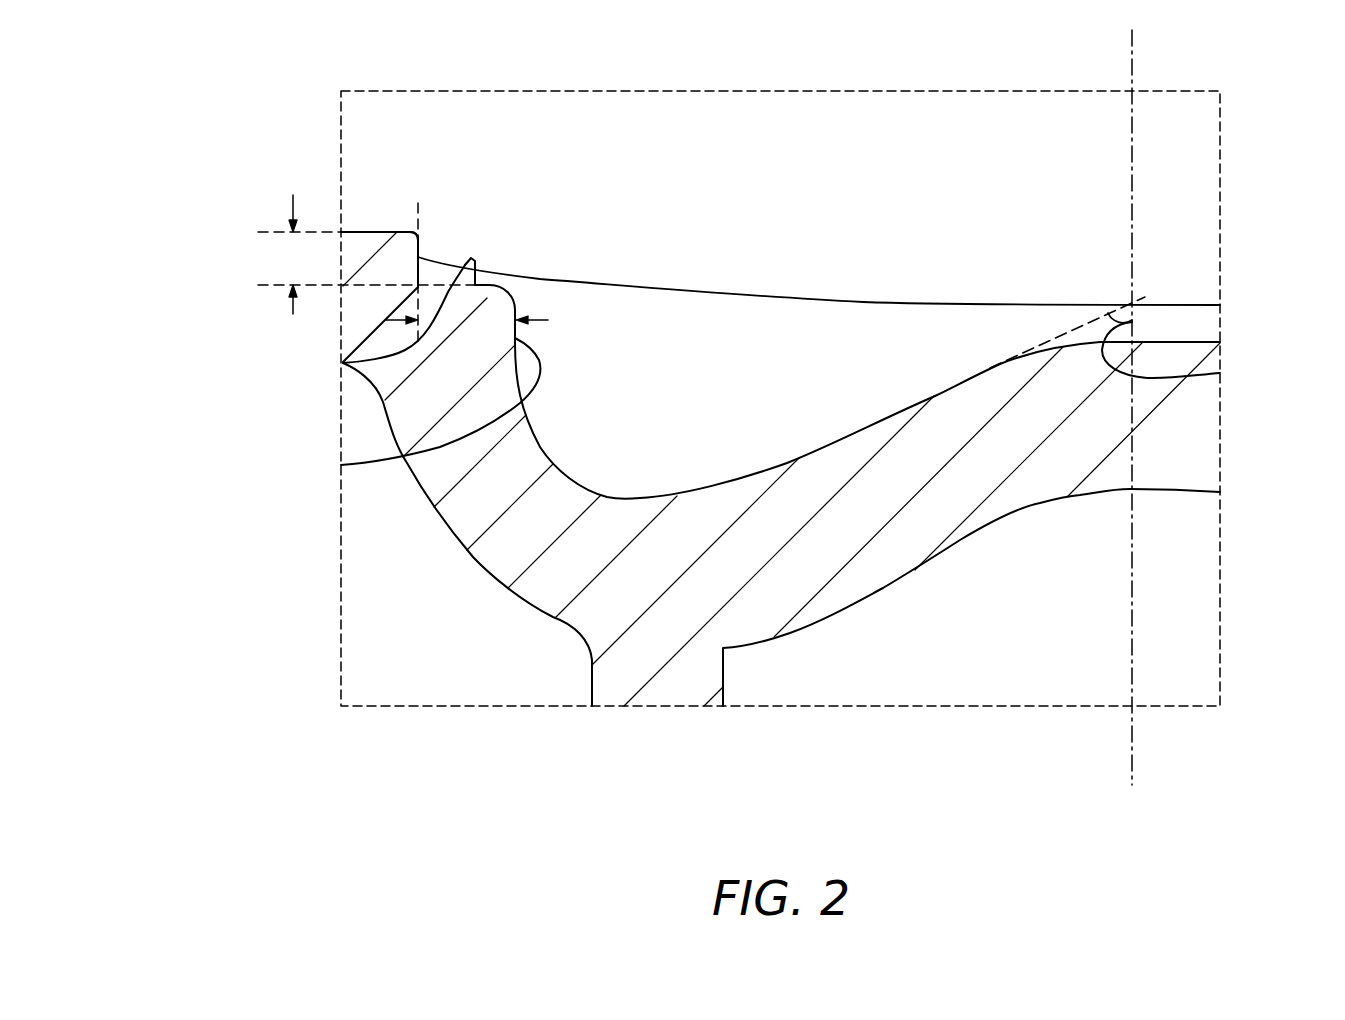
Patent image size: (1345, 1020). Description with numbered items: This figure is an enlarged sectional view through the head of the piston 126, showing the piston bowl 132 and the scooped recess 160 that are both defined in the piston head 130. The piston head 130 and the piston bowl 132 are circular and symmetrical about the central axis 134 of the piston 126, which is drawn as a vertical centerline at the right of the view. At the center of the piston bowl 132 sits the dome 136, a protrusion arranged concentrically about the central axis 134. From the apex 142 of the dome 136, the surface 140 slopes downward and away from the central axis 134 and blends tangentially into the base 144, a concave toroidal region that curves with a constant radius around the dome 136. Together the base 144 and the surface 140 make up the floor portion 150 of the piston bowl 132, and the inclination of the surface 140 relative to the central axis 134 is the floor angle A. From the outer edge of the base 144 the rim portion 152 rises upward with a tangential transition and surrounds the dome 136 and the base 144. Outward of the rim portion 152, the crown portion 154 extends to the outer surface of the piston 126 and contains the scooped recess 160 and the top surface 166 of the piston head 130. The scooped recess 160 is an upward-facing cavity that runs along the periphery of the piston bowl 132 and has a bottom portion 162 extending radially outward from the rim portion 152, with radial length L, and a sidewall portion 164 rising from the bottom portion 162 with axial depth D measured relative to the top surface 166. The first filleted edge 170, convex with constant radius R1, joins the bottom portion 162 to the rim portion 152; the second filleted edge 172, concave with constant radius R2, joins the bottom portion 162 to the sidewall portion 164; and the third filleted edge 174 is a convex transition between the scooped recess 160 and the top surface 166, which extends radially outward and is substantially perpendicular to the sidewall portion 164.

The piston 126 is at (483, 570).
The piston head 130 is at (410, 417).
The piston bowl 132 is at (822, 407).
The central axis 134 is at (1135, 42).
The dome 136 is at (1182, 334).
The surface 140 is at (893, 407).
The apex 142 is at (1133, 340).
The base 144 is at (640, 497).
The floor portion 150 is at (749, 461).
The rim portion 152 is at (341, 465).
The crown portion 154 is at (390, 231).
The scooped recess 160 is at (432, 231).
The bottom portion 162 is at (343, 362).
The sidewall portion 164 is at (418, 257).
The top surface 166 is at (372, 232).
The first filleted edge 170 is at (518, 300).
The second filleted edge 172 is at (433, 262).
The third filleted edge 174 is at (415, 229).
The radius R1 is at (496, 280).
The radius R2 is at (430, 272).
The depth D is at (341, 257).
The length L is at (542, 317).
The floor angle A is at (1220, 373).